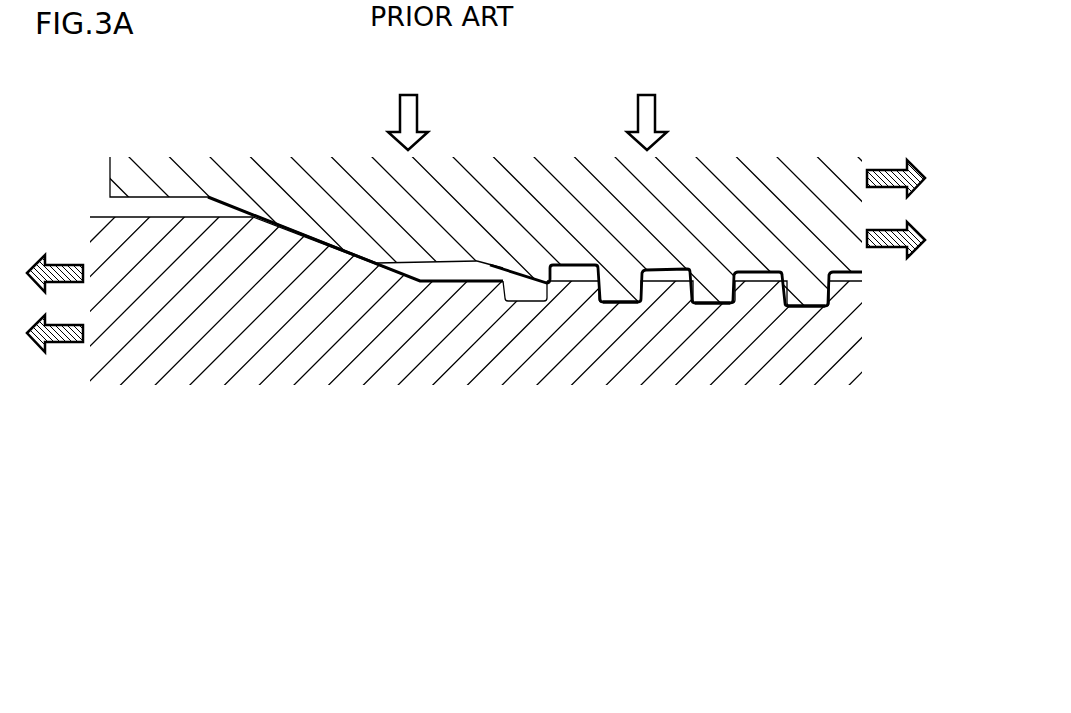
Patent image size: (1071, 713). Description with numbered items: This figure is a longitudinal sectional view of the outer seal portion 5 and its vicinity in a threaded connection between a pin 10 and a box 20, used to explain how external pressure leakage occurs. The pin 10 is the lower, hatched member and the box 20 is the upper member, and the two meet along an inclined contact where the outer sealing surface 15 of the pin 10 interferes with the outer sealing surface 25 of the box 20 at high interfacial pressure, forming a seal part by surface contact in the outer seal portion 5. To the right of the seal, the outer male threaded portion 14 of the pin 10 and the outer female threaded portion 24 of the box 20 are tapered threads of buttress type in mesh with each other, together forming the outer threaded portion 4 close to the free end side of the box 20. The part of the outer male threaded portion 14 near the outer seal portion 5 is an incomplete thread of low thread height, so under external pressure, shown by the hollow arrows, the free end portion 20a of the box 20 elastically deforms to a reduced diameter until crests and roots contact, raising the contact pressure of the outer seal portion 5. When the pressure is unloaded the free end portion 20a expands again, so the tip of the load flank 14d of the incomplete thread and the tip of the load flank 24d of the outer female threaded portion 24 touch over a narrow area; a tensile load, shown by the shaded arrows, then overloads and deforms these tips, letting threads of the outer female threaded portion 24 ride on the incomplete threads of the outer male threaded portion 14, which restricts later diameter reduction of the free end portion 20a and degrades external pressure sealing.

The pin 10 is at (529, 297).
The box 20 is at (510, 188).
The outer seal portion 5 is at (363, 100).
The outer sealing surface 15 is at (322, 251).
The outer sealing surface 25 is at (317, 251).
The free end portion 20a is at (436, 168).
The load flank 24d is at (548, 282).
The load flank 14d is at (547, 283).
The outer threaded portion 4 is at (780, 105).
The outer female threaded portion 24 is at (713, 243).
The outer male threaded portion 14 is at (731, 321).